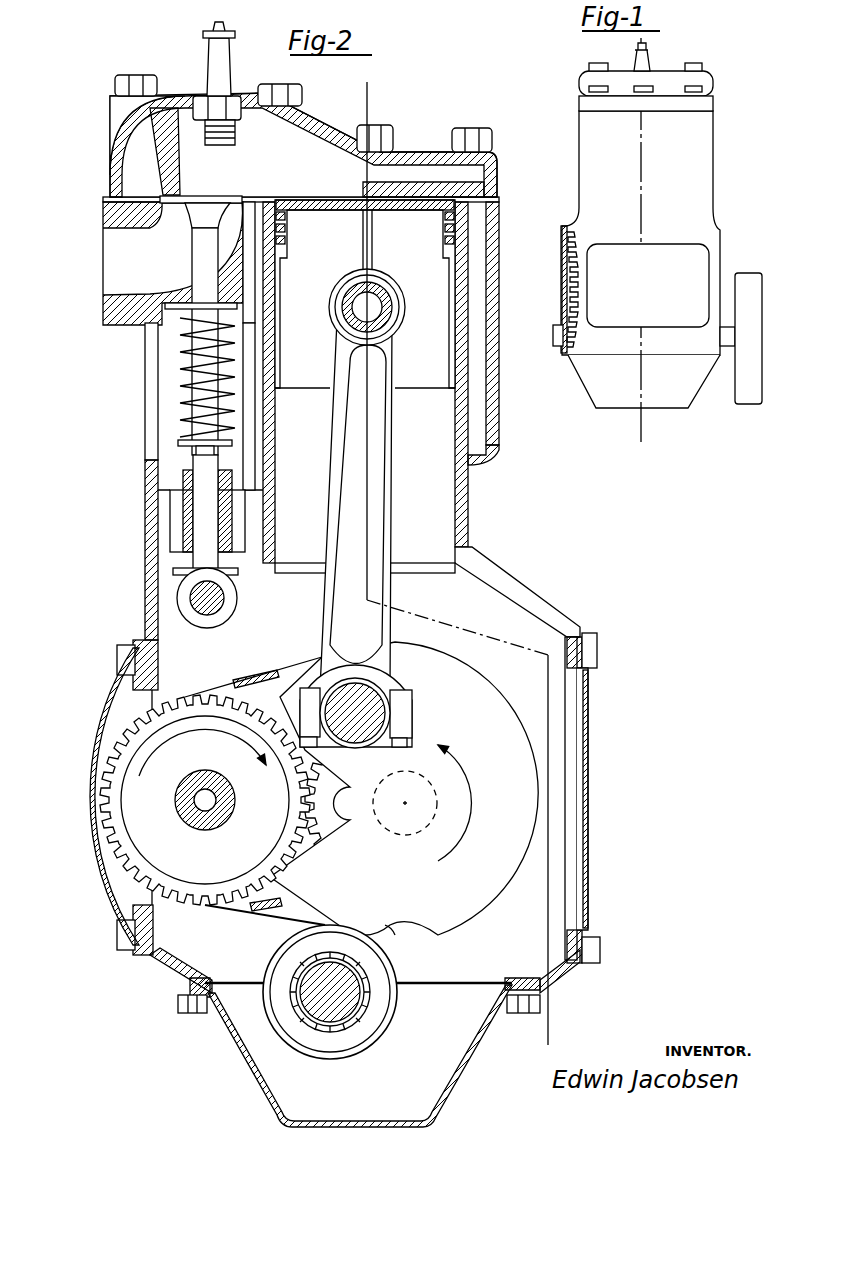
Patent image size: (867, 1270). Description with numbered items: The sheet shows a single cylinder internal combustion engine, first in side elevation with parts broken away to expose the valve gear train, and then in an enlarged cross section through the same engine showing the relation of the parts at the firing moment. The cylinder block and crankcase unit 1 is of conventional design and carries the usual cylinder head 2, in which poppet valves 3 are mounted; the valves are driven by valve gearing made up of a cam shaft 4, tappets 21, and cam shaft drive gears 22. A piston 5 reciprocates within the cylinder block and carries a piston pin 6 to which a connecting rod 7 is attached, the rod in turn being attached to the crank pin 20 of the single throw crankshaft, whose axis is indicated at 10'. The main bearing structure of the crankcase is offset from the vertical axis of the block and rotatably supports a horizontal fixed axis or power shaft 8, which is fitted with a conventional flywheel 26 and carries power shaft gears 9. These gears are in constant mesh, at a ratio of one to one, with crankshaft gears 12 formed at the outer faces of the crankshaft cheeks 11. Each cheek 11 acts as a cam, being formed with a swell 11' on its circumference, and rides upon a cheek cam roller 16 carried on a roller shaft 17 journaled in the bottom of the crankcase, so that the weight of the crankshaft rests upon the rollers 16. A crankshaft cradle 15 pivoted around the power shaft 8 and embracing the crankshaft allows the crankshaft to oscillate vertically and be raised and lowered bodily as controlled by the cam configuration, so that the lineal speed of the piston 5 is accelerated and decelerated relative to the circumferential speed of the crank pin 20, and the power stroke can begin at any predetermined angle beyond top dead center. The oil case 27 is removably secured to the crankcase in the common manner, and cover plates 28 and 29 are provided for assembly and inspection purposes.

In FIG. 2, the cylinder block and crankcase unit 1 is at (468, 535).
In FIG. 1, the cylinder block and crankcase unit 1 is at (688, 197).
In FIG. 2, the cylinder head 2 is at (420, 150).
In FIG. 1, the cylinder head 2 is at (690, 79).
In FIG. 2, the poppet valves 3 is at (205, 215).
In FIG. 2, the cam shaft 4 is at (205, 597).
In FIG. 2, the piston 5 is at (440, 362).
In FIG. 2, the piston pin 6 is at (385, 307).
In FIG. 2, the connecting rod 7 is at (385, 495).
In FIG. 2, the power shaft 8 is at (190, 798).
In FIG. 2, the power shaft gears 9 is at (120, 835).
In FIG. 2, the crankshaft axis 10' is at (422, 813).
In FIG. 2, the crankshaft cheeks 11 is at (467, 788).
In FIG. 2, the swell 11' is at (418, 942).
In FIG. 2, the crankshaft gears 12 is at (330, 818).
In FIG. 2, the crankshaft cradle 15 is at (305, 913).
In FIG. 2, the cheek cam rollers 16 is at (305, 1038).
In FIG. 2, the roller shaft 17 is at (323, 997).
In FIG. 2, the crank pin 20 is at (355, 712).
In FIG. 2, the tappets 21 is at (208, 528).
In FIG. 1, the cam shaft drive gears 22 is at (561, 282).
In FIG. 1, the flywheel 26 is at (739, 391).
In FIG. 2, the oil case 27 is at (278, 1113).
In FIG. 2, the cover plate 28 is at (108, 718).
In FIG. 2, the cover plate 29 is at (590, 800).
In FIG. 1, the cover plate 29 is at (681, 276).